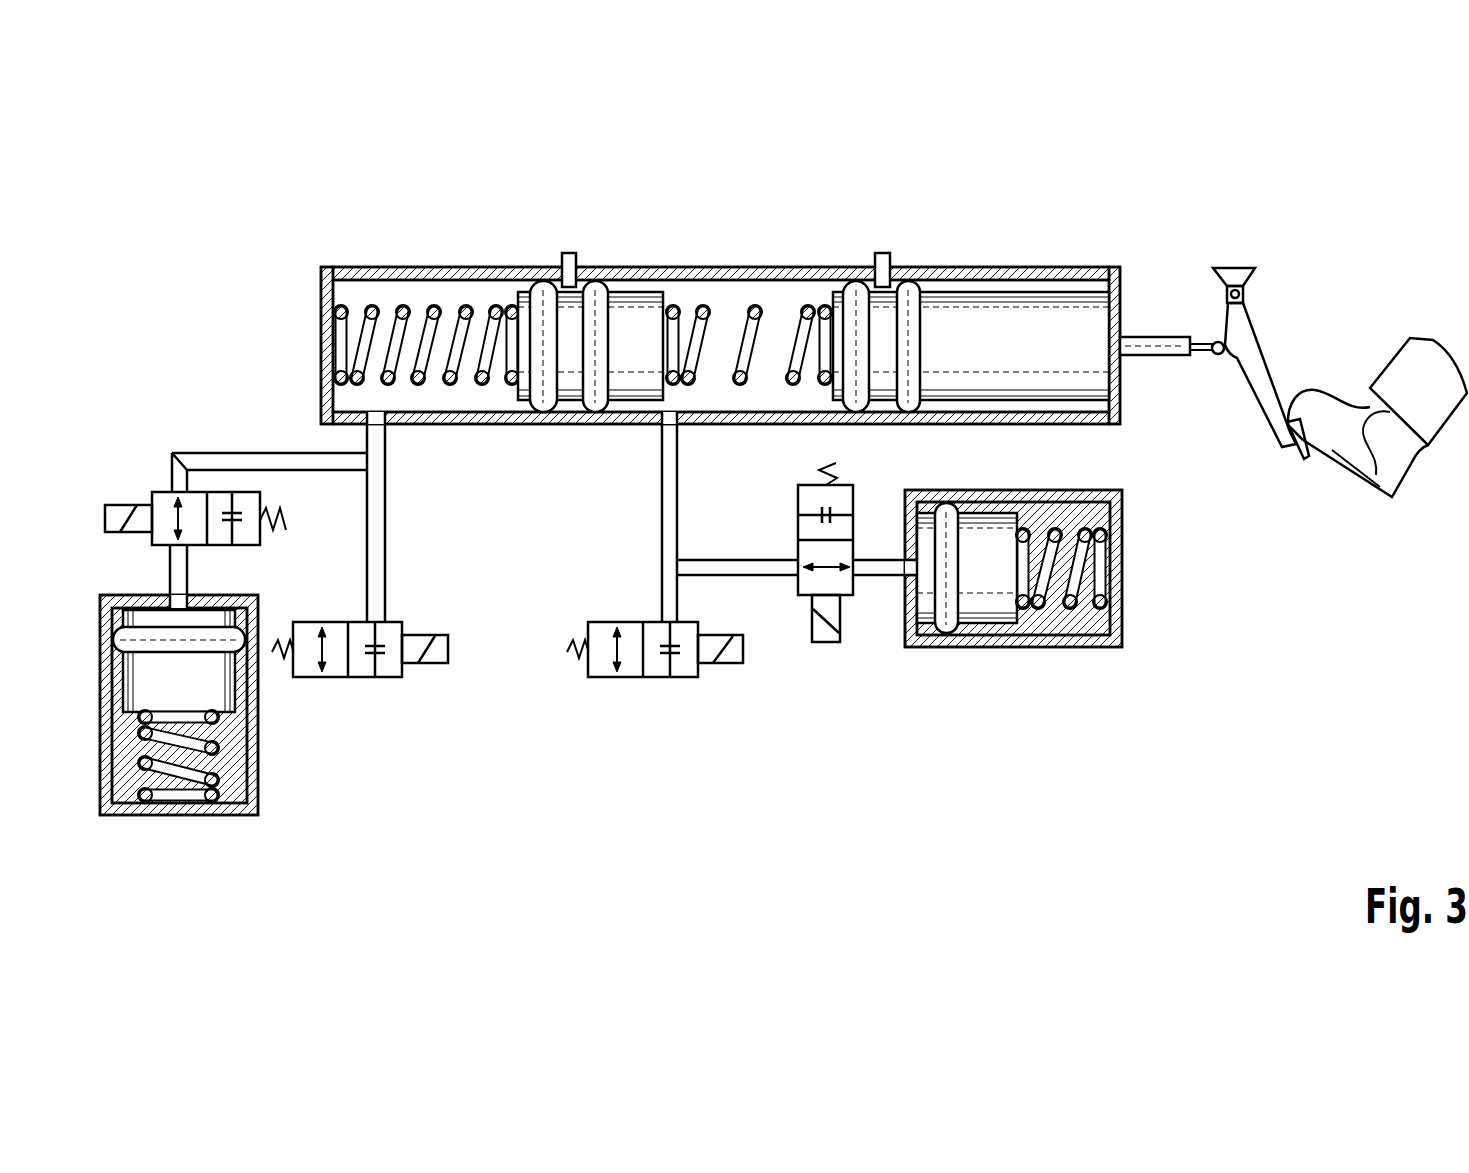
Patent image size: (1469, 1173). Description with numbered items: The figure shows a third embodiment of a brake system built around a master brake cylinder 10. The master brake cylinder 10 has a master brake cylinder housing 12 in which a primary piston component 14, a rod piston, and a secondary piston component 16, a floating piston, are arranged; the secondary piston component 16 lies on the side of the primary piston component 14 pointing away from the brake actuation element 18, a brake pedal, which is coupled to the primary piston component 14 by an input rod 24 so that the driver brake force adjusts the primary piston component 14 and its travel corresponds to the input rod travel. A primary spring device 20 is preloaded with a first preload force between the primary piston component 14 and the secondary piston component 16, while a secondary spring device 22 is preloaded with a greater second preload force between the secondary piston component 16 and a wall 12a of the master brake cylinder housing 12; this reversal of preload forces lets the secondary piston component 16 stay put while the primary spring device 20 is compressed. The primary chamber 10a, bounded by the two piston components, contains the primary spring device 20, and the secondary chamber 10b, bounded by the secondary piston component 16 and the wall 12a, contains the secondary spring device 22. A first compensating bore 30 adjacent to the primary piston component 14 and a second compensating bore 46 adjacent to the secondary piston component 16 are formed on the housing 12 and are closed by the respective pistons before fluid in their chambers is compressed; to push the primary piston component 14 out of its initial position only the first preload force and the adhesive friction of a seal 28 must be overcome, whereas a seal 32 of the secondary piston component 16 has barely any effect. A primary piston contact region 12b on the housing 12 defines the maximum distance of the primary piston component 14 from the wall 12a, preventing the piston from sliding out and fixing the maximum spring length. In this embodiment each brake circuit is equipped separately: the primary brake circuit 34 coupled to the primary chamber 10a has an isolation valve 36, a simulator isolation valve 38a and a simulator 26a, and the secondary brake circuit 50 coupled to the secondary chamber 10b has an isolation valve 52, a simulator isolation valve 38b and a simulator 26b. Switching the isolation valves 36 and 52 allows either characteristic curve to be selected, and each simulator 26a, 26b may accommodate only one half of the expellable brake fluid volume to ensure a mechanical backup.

The master brake cylinder 10 is at (977, 208).
The primary chamber 10a is at (749, 301).
The secondary chamber 10b is at (426, 300).
The master brake cylinder housing 12 is at (707, 275).
The wall of master brake cylinder housing 12a is at (327, 347).
The primary piston contact region 12b is at (1113, 380).
The primary piston component 14 is at (1037, 307).
The secondary piston component 16 is at (652, 293).
The brake actuation element 18 is at (1245, 340).
The primary spring device 20 is at (753, 303).
The secondary spring device 22 is at (372, 300).
The input rod 24 is at (1175, 342).
The simulator 26a is at (1122, 568).
The simulator 26b is at (177, 815).
The seal of primary piston component 28 is at (971, 306).
The first compensating bore 30 is at (882, 253).
The seal of secondary piston component 32 is at (593, 306).
The primary brake circuit 34 is at (649, 644).
The isolation valve 36 is at (653, 678).
The simulator isolation valve 38a is at (855, 588).
The simulator isolation valve 38b is at (150, 490).
The second compensating bore 46 is at (570, 253).
The secondary brake circuit 50 is at (380, 644).
The isolation valve 52 is at (358, 678).